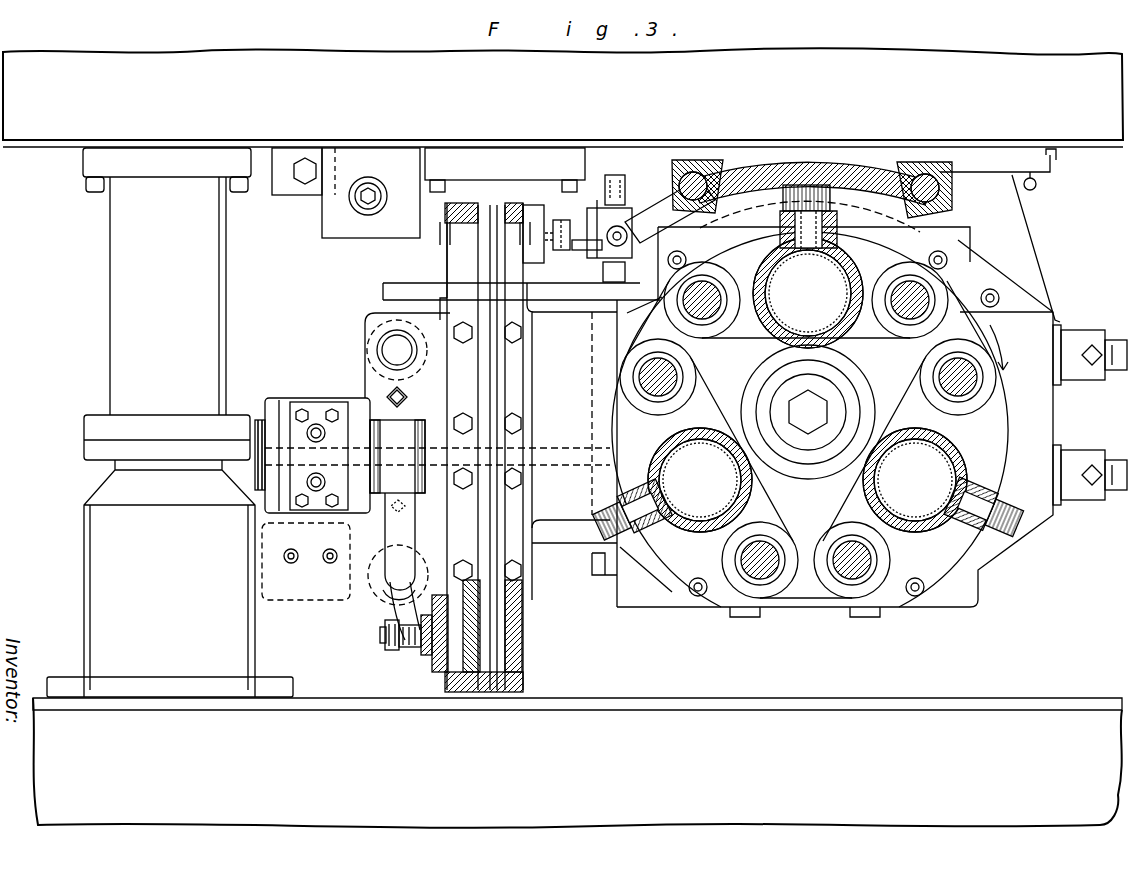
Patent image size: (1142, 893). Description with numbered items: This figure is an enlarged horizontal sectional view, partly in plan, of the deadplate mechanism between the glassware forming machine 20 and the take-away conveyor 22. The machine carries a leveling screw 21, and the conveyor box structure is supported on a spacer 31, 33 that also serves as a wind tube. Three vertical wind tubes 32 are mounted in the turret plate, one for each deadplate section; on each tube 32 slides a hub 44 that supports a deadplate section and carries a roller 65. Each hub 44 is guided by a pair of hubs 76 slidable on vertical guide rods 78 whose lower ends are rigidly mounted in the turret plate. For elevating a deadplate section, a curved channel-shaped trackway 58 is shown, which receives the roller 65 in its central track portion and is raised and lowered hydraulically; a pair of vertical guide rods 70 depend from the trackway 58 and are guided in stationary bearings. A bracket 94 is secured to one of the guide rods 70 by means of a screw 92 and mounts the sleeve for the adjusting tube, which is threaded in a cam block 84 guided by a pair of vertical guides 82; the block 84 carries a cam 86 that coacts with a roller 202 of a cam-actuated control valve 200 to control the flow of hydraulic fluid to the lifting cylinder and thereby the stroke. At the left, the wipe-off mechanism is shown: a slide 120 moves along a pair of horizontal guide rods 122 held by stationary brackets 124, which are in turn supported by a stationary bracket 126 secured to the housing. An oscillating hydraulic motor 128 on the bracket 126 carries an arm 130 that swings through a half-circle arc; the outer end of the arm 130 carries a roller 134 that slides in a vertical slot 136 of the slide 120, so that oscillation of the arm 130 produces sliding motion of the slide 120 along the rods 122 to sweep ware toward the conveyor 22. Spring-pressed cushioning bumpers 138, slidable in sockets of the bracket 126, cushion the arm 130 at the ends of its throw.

The glassware forming machine 20 is at (362, 104).
The take-away conveyor 22 is at (668, 756).
The leveling screw 21 is at (350, 200).
The spacer 31 is at (168, 269).
The spacer 33 is at (164, 584).
The vertical wind tube 32 is at (775, 268).
The hub 44 is at (840, 340).
The curved channel-shaped trackway 58 is at (830, 170).
The roller 65 is at (790, 185).
The vertical guide rod 70 is at (700, 180).
The hub 76 is at (700, 338).
The vertical guide rod 78 is at (708, 290).
The vertical guide 82 is at (615, 175).
The cam block 84 is at (598, 215).
The cam 86 is at (582, 252).
The screw 92 is at (622, 230).
The bracket 94 is at (650, 222).
The slide 120 is at (520, 640).
The horizontal guide rod 122 is at (500, 370).
The stationary bracket 124 is at (462, 200).
The stationary bracket 126 is at (440, 395).
The oscillating hydraulic motor 128 is at (357, 410).
The arm 130 is at (395, 565).
The roller 134 is at (428, 660).
The vertical slot 136 is at (450, 676).
The cushioning bumper 138 is at (388, 349).
The cam-actuated control valve 200 is at (538, 205).
The roller 202 is at (562, 222).